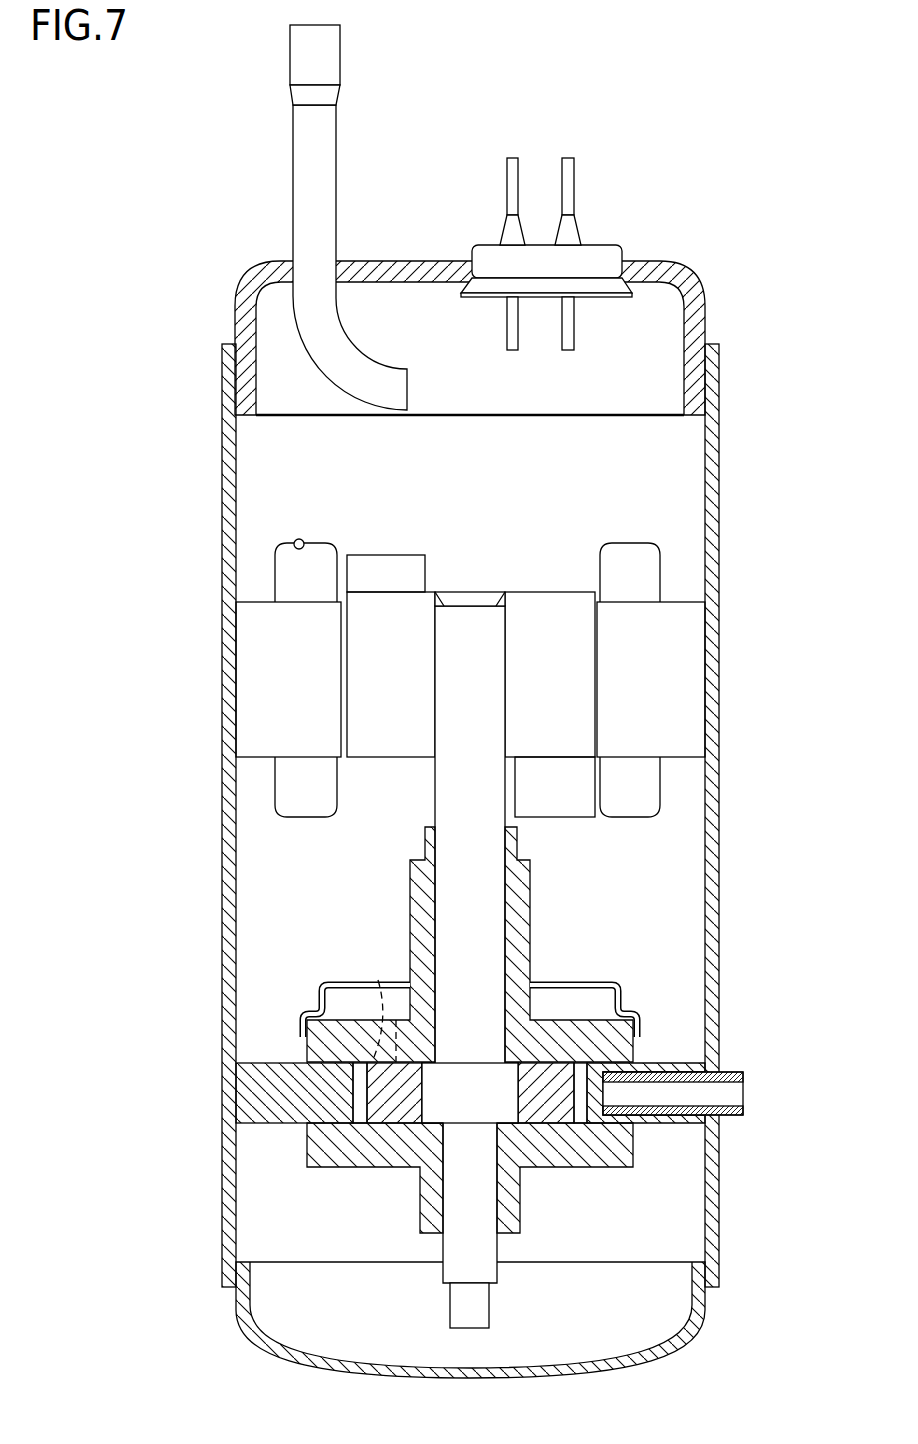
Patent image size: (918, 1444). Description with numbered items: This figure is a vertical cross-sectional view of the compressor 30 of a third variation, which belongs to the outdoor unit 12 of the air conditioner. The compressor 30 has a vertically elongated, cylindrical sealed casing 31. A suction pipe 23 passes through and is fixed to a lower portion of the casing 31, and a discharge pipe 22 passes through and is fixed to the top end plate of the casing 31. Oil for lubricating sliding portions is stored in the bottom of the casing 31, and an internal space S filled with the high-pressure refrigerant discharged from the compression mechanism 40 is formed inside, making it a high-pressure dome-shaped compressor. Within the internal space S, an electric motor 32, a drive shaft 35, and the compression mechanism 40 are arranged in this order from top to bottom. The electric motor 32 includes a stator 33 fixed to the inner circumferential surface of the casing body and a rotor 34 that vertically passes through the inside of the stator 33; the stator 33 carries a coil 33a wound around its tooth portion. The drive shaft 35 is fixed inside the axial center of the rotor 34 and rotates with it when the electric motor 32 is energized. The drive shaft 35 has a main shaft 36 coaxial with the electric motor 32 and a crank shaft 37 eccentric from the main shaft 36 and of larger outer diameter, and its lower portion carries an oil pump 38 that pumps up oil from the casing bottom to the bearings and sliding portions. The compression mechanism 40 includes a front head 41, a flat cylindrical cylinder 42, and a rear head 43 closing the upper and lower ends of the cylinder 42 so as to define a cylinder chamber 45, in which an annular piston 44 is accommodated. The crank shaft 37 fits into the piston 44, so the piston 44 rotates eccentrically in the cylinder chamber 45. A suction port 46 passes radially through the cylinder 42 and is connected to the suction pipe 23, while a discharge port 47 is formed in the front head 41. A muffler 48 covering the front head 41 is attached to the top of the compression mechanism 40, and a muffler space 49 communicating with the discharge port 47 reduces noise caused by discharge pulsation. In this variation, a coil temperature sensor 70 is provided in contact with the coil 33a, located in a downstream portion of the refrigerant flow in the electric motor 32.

The outdoor unit 12 is at (712, 765).
The discharge pipe 22 is at (312, 145).
The suction pipe 23 is at (735, 1118).
The compressor 30 is at (667, 228).
The casing 31 is at (718, 433).
The electric motor 32 is at (510, 681).
The stator 33 is at (682, 663).
The coil 33a is at (323, 545).
The rotor 34 is at (560, 720).
The drive shaft 35 is at (465, 592).
The main shaft 36 is at (443, 788).
The crank shaft 37 is at (442, 1102).
The oil pump 38 is at (450, 1316).
The compression mechanism 40 is at (467, 1030).
The front head 41 is at (307, 1040).
The cylinder 42 is at (257, 1107).
The rear head 43 is at (325, 1148).
The piston 44 is at (377, 1105).
The cylinder chamber 45 is at (358, 1088).
The suction port 46 is at (598, 1078).
The discharge port 47 is at (378, 978).
The muffler 48 is at (602, 980).
The muffler space 49 is at (558, 995).
The coil temperature sensor 70 is at (298, 540).
The internal space S is at (272, 878).